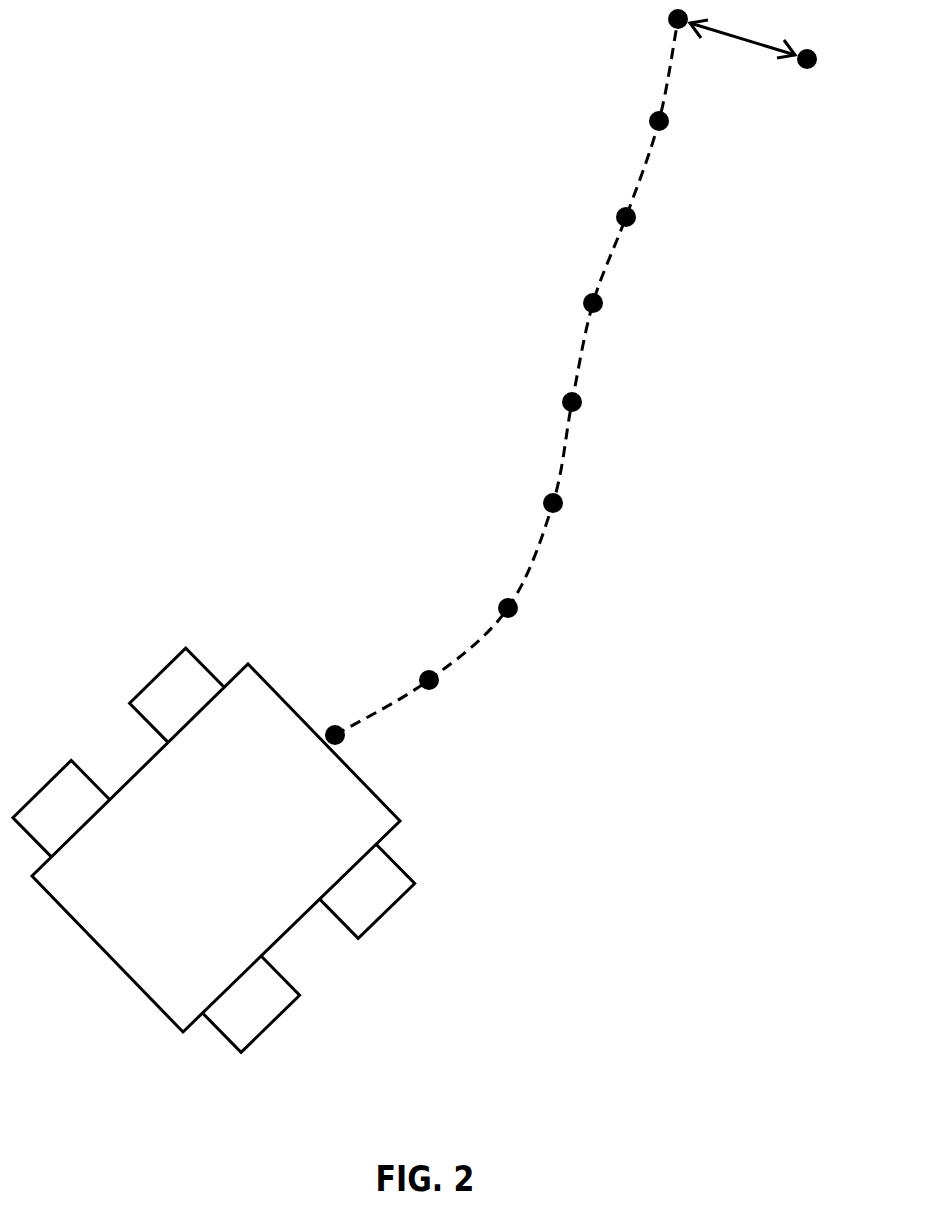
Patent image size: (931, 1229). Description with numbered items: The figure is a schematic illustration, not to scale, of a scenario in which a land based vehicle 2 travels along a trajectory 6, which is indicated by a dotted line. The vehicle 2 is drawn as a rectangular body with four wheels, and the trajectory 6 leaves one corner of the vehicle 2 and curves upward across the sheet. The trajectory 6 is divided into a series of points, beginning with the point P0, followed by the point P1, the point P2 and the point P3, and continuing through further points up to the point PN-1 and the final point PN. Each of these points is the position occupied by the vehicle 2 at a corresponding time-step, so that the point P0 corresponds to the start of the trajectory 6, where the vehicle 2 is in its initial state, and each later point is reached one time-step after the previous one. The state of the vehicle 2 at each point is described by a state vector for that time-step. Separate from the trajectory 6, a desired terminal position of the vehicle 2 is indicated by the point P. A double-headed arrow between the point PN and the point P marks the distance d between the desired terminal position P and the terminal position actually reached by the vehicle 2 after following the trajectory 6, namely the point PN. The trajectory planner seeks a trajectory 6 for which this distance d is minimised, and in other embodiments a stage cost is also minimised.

The vehicle 2 is at (203, 851).
The trajectory 6 is at (580, 358).
The point p0 P0 is at (332, 718).
The point p1 P1 is at (446, 695).
The point p2 P2 is at (525, 623).
The point p3 P3 is at (571, 507).
The point pN PN is at (658, 21).
The point pN-1 PN-1 is at (631, 123).
The desired terminal position P is at (822, 52).
The distance d is at (742, 31).